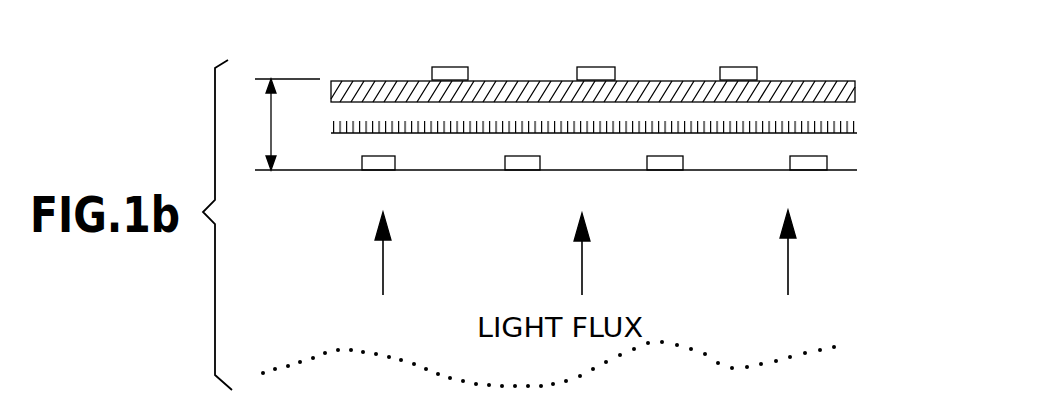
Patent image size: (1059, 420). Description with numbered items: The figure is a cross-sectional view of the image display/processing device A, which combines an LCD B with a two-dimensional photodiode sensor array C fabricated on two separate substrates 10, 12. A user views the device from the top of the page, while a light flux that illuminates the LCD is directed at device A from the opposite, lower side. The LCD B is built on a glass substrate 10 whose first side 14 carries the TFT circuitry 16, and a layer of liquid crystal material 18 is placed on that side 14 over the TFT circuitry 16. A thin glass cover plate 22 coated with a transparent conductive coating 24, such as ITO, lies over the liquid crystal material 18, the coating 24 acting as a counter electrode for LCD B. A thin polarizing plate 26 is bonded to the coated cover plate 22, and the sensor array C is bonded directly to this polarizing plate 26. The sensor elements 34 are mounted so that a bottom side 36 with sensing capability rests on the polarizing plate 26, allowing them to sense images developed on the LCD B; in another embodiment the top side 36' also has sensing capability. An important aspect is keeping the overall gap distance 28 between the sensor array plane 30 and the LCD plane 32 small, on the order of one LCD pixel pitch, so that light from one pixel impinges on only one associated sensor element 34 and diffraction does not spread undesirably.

The image display/processing device A is at (238, 48).
The LCD B is at (863, 80).
The photodiode array C is at (852, 52).
The glass substrate 10 is at (341, 178).
The substrate 12 is at (332, 79).
The first side 14 is at (308, 169).
The TFT circuitry 16 is at (395, 157).
The liquid crystal material 18 is at (778, 160).
The glass cover plate 22 is at (790, 133).
The transparent conductive coating 24 is at (418, 127).
The polarizing plate 26 is at (822, 88).
The gap distance 28 is at (270, 127).
The sensor array plane 30 is at (258, 79).
The LCD plane 32 is at (255, 173).
The sensor elements 34 is at (432, 69).
The bottom side 36 is at (642, 68).
The top side 36' is at (629, 53).